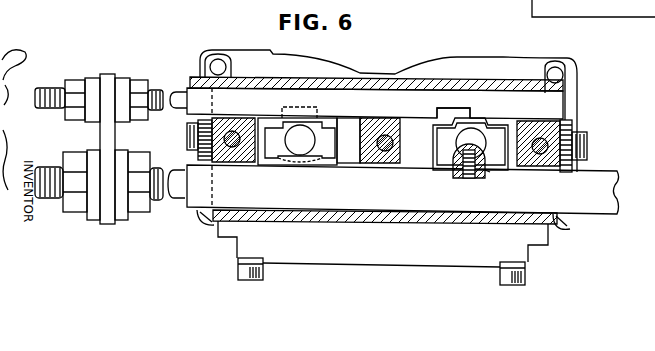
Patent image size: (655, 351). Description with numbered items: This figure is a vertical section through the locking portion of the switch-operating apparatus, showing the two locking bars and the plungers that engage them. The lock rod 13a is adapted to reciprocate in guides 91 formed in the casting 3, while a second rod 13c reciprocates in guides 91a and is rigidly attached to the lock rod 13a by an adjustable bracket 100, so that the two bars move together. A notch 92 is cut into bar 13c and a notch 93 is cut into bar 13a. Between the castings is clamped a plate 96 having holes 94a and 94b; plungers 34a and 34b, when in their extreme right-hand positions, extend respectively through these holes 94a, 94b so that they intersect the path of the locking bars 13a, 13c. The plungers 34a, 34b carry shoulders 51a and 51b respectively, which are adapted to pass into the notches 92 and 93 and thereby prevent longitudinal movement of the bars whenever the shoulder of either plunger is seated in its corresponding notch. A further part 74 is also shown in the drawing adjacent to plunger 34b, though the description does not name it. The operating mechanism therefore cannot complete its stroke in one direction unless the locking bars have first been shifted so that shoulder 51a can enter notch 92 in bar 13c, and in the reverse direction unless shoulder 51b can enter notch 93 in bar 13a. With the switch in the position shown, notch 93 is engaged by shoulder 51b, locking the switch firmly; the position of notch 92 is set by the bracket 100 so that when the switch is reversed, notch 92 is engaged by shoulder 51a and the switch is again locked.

The casting 3 is at (381, 80).
The lock rod 13a is at (601, 212).
The rod 13c is at (194, 83).
The plunger 34a is at (324, 160).
The plunger 34b is at (448, 153).
The shoulder 51a is at (318, 107).
The shoulder 51b is at (488, 172).
The stud 74 is at (467, 174).
The guides 91 is at (198, 212).
The guides 91a is at (545, 124).
The notch 92 is at (434, 115).
The notch 93 is at (475, 177).
The hole 94a is at (276, 160).
The hole 94b is at (497, 126).
The plate 96 is at (348, 160).
The adjustable bracket 100 is at (103, 132).